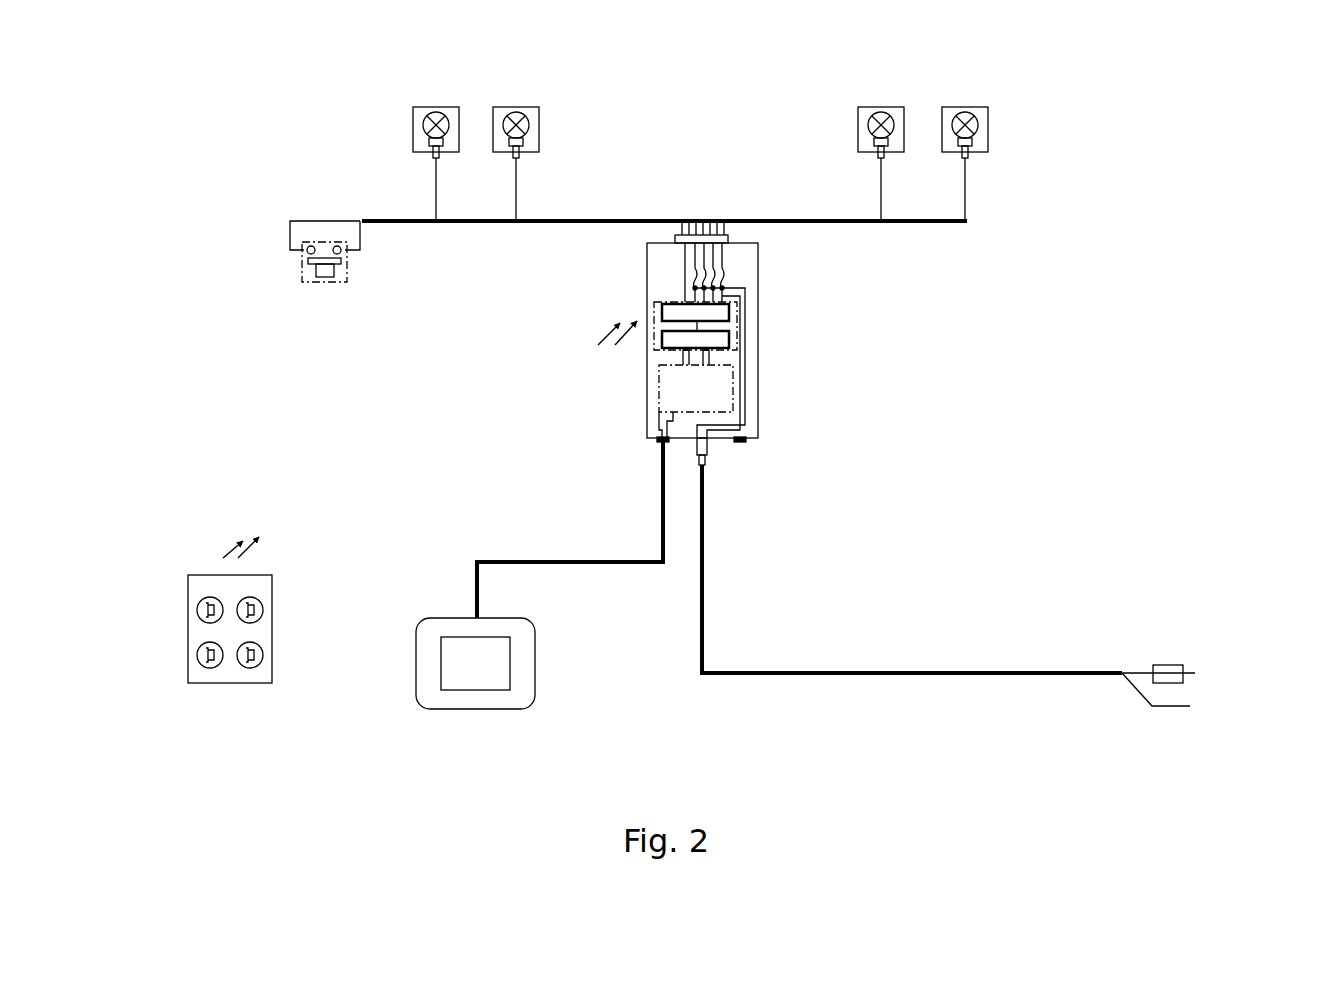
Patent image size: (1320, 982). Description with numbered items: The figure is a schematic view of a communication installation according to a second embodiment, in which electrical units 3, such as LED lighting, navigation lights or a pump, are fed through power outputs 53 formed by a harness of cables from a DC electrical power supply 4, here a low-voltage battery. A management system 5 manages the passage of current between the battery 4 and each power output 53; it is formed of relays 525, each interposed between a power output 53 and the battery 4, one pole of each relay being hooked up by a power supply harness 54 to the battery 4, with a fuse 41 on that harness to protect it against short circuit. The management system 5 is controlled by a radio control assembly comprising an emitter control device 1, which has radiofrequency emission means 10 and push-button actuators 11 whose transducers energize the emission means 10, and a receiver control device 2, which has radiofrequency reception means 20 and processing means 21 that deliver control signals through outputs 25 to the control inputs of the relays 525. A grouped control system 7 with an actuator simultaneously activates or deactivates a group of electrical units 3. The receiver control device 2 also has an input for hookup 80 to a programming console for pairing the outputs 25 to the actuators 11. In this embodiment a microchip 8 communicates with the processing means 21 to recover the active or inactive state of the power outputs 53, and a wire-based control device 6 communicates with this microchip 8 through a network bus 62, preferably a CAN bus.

The emitter control device 1 is at (268, 652).
The receiver control device 2 is at (738, 344).
The electrical units 3 is at (989, 106).
The electrical power supply 4 is at (1195, 670).
The management system 5 is at (672, 270).
The wire-based control device 6 is at (470, 697).
The grouped control system 7 is at (324, 279).
The microchip 8 is at (668, 395).
The radiofrequency emission means 10 is at (262, 634).
The actuators 11 is at (258, 658).
The radiofrequency reception means 20 is at (661, 343).
The processing means 21 is at (664, 311).
The outputs 25 is at (726, 297).
The fuse 41 is at (1167, 663).
The power outputs 53 is at (967, 181).
The power supply harness 54 is at (705, 578).
The network bus 62 is at (617, 565).
The input for hookup 80 is at (740, 444).
The relays 525 is at (727, 268).